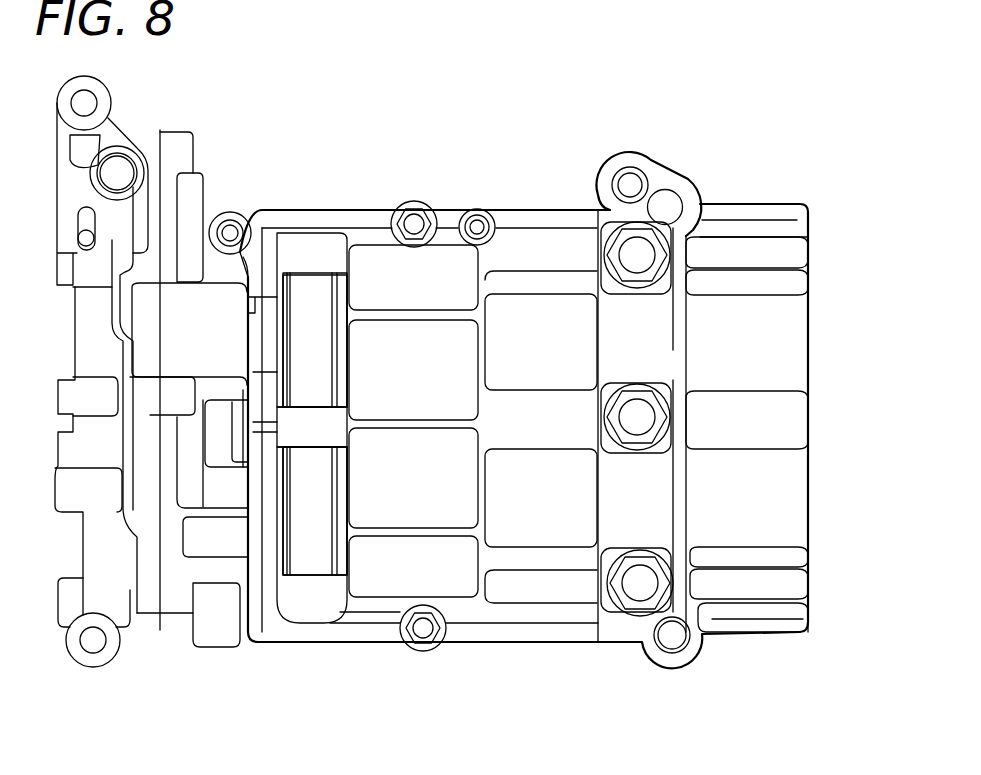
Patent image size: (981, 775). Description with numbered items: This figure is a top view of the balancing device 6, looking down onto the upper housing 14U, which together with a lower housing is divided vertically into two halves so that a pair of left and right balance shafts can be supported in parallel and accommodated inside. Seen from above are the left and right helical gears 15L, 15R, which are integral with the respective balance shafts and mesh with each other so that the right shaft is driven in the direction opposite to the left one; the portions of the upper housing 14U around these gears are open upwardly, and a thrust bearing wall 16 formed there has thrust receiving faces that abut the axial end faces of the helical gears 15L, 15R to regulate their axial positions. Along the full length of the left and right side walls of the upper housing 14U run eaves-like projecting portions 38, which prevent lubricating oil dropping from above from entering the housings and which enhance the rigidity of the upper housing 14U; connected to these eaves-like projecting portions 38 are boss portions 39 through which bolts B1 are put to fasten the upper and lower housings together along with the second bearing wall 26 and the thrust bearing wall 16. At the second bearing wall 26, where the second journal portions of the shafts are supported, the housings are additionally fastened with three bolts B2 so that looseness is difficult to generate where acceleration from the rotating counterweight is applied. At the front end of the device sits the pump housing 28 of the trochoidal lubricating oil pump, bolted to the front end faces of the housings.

The balancing device 6 is at (553, 162).
The upper housing 14U is at (795, 325).
The left helical gear 15L is at (312, 290).
The right helical gear 15R is at (312, 570).
The thrust bearing wall 16 is at (300, 373).
The second bearing wall 26 is at (610, 520).
The pump housing 28 is at (90, 318).
The eaves-like projecting portions 38 is at (342, 211).
The boss portions 39 is at (432, 203).
The bolts B1 is at (412, 200).
The bolts B2 is at (655, 405).